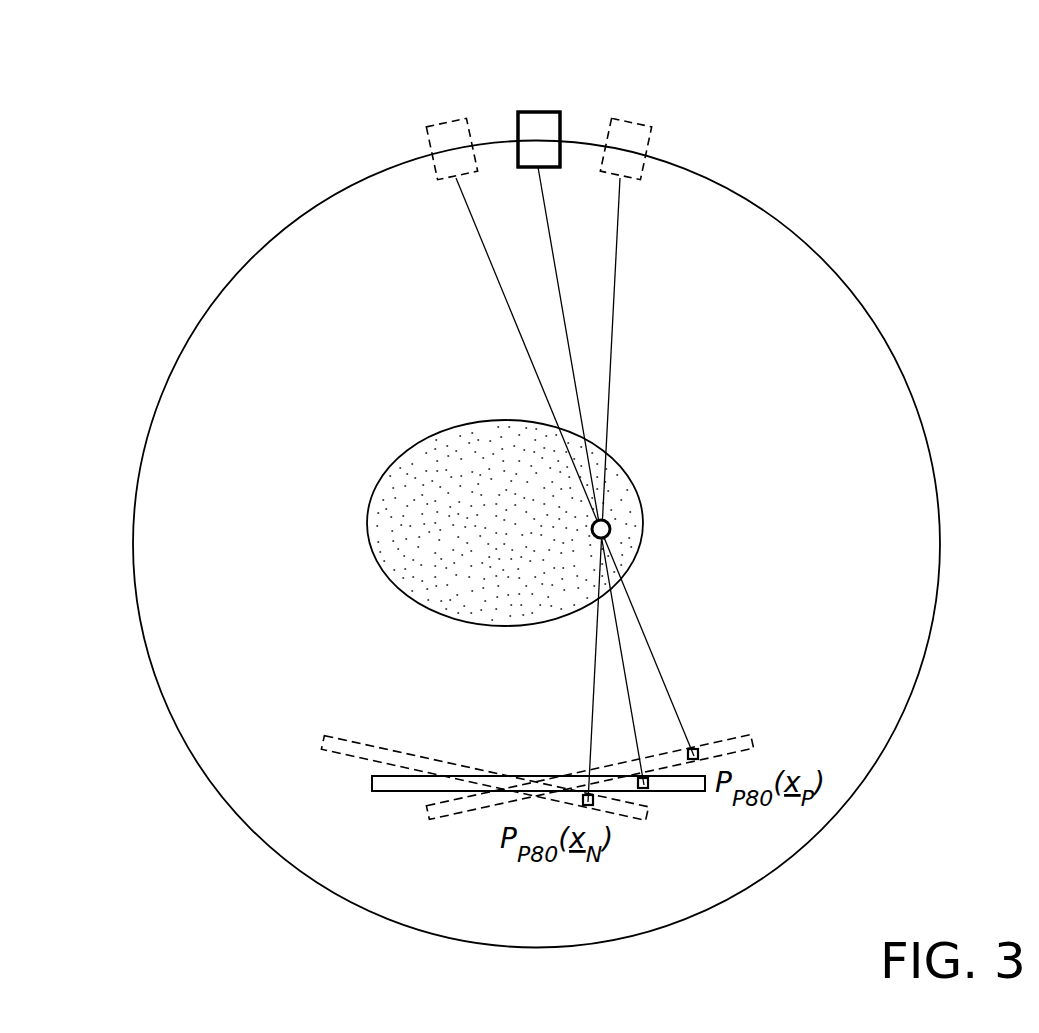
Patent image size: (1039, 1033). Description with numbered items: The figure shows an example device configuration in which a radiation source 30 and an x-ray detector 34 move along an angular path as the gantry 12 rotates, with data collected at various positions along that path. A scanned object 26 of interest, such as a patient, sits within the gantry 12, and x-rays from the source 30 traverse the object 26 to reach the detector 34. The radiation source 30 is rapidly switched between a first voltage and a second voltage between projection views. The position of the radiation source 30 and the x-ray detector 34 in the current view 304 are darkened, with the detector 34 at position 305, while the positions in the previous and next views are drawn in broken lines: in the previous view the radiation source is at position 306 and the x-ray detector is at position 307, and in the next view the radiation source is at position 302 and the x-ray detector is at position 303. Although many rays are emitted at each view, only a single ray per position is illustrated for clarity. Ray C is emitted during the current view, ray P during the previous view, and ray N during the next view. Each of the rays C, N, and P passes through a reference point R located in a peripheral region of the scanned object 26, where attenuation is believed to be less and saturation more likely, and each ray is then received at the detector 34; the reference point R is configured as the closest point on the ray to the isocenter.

The gantry 12 is at (212, 243).
The scanned object 26 is at (328, 532).
The radiation source 30 is at (525, 190).
The x-ray detector 34 is at (338, 779).
The radiation source position in next view 302 is at (637, 122).
The x-ray detector position in next view 303 is at (350, 738).
The current view 304 is at (537, 112).
The x-ray detector position in current view 305 is at (395, 792).
The radiation source position in previous view 306 is at (438, 125).
The x-ray detector position in previous view 307 is at (751, 732).
The reference point R is at (613, 528).
The ray emitted during current view C is at (620, 652).
The ray emitted during previous view P is at (655, 662).
The ray emitted during next view N is at (593, 697).